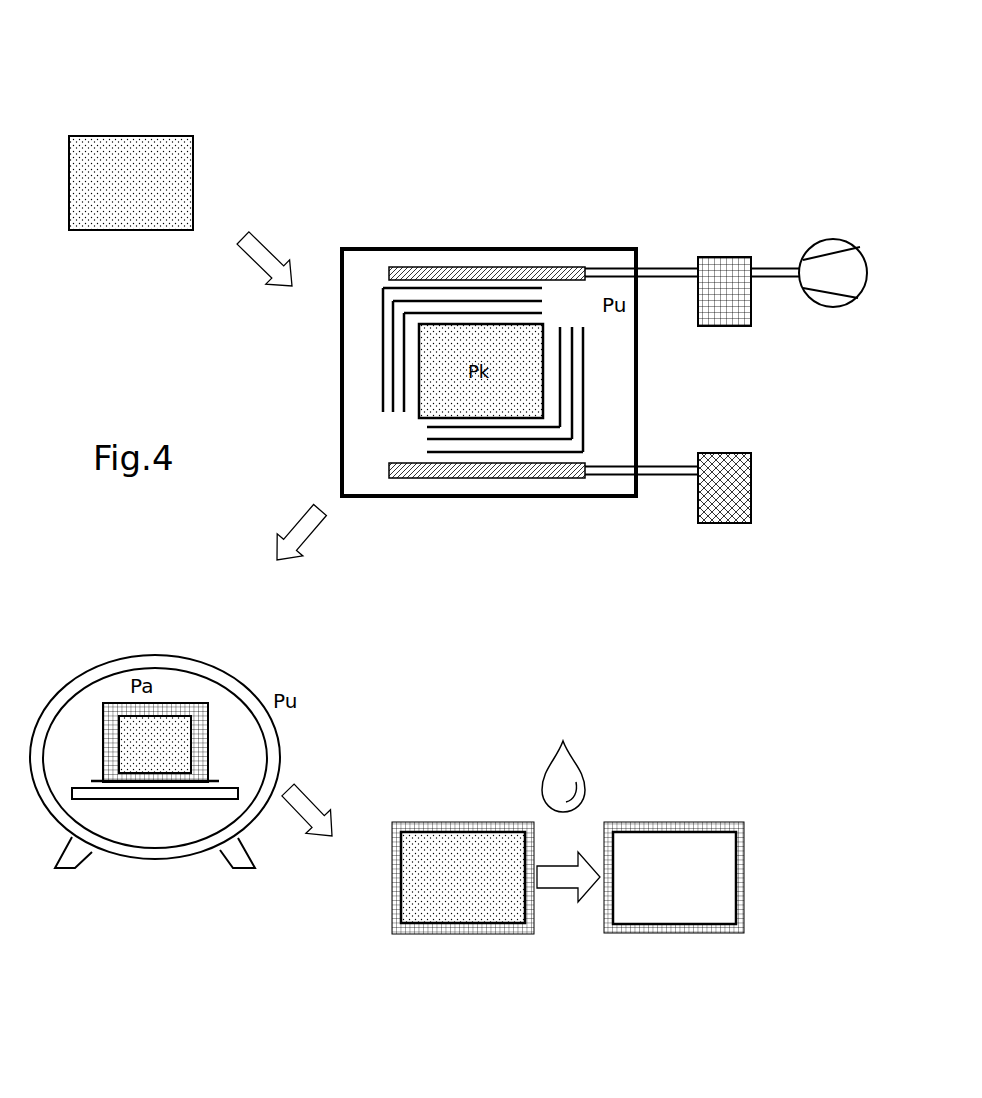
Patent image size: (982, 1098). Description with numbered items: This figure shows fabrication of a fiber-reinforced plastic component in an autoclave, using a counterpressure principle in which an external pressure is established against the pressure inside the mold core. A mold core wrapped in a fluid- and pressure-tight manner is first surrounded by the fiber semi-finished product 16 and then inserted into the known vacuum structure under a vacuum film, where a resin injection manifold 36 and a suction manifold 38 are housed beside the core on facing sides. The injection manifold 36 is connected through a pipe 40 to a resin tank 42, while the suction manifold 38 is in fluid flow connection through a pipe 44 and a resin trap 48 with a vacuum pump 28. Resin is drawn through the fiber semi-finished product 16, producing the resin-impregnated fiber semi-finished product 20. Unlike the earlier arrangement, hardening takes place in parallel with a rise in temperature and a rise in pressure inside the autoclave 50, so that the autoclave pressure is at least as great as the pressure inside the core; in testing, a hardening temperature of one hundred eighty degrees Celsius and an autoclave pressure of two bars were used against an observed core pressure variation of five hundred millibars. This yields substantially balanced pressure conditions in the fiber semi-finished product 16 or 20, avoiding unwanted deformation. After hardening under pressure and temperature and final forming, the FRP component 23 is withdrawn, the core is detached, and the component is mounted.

The fiber semi-finished product 16 is at (393, 352).
The resin-impregnated fiber semi-finished product 20 is at (497, 787).
The FRP component 23 is at (657, 822).
The vacuum pump 28 is at (847, 242).
The resin injection manifold 36 is at (445, 478).
The suction manifold 38 is at (495, 274).
The pipe 40 is at (680, 476).
The resin tank 42 is at (746, 488).
The pipe 44 is at (661, 268).
The resin trap 48 is at (735, 257).
The autoclave 50 is at (100, 665).